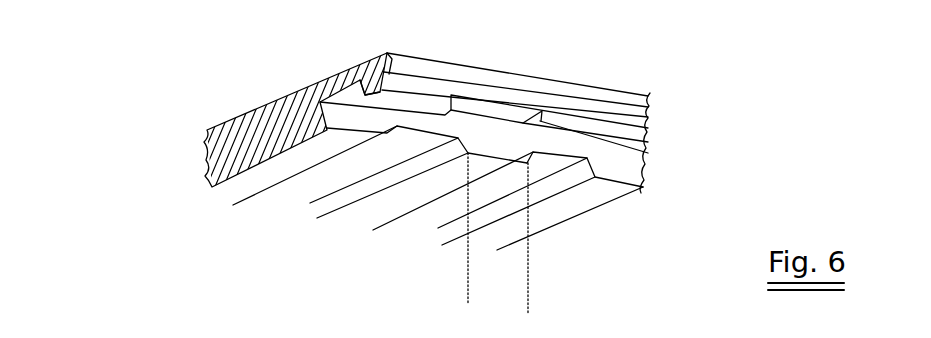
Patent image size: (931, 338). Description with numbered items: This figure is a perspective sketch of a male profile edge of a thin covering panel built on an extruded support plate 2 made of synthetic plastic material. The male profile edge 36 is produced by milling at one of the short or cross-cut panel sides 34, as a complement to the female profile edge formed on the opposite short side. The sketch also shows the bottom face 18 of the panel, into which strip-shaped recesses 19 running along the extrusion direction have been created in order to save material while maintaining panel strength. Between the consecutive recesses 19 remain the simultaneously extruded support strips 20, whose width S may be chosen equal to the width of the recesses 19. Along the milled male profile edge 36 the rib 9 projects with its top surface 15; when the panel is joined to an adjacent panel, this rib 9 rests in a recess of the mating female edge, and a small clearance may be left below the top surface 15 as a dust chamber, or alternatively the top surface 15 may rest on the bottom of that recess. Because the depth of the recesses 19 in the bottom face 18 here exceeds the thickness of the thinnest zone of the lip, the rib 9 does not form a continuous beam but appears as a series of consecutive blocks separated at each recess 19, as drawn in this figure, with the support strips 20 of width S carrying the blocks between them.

The support plate 2 is at (283, 115).
The male profile edge 36 is at (334, 54).
The short panel side 34 is at (515, 67).
The rib 9 is at (490, 92).
The support strip 20 is at (617, 163).
The bottom face 18 is at (380, 181).
The recess 19 is at (372, 213).
The top surface 15 is at (508, 200).
The width of intermediate strips S is at (527, 293).